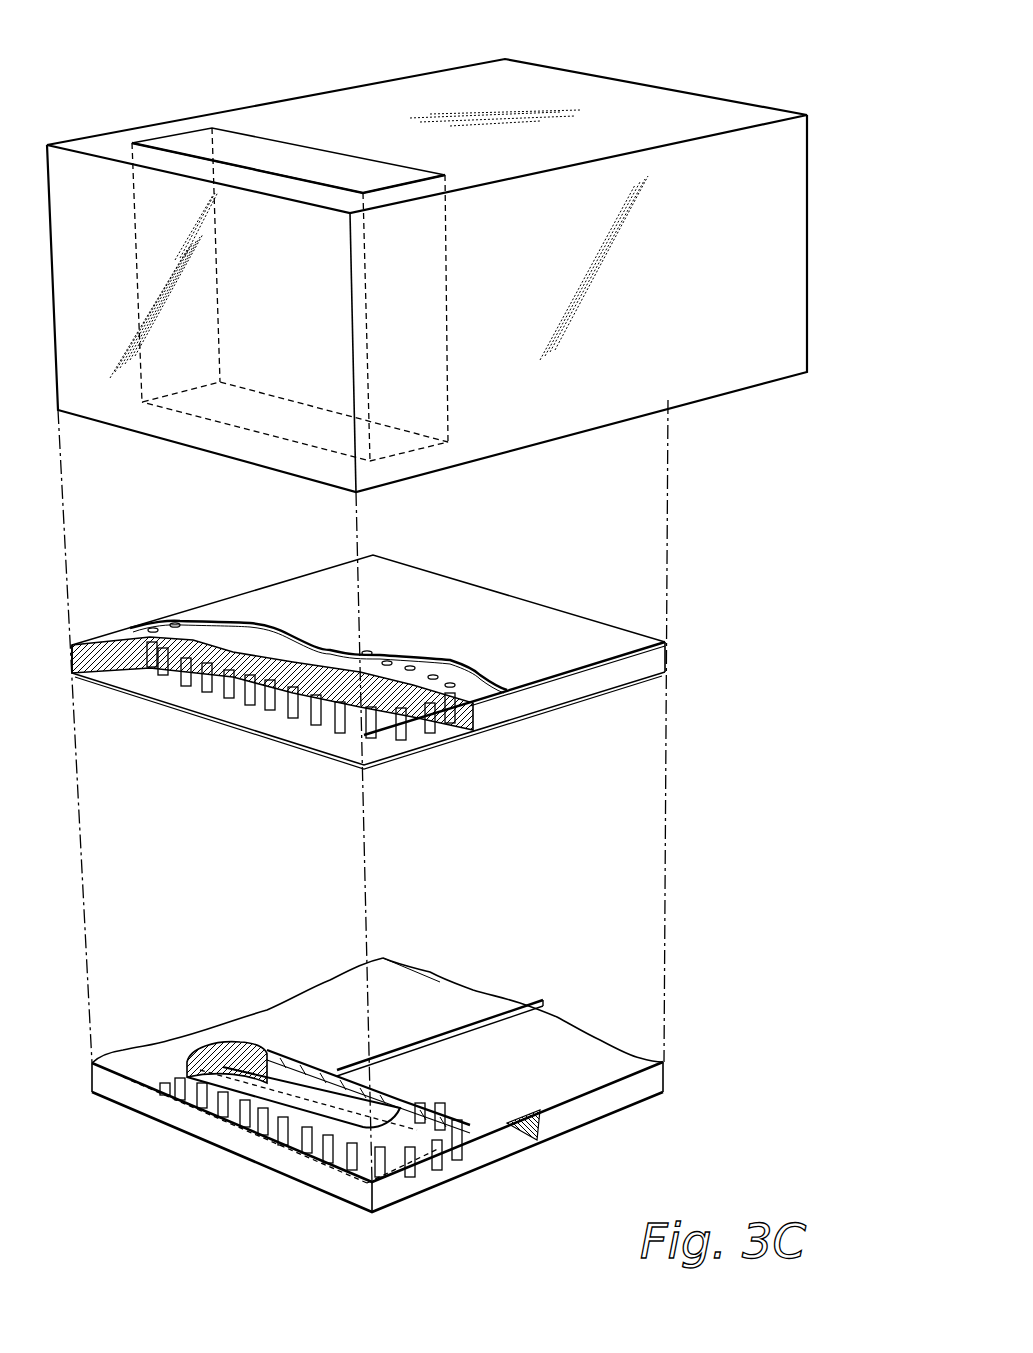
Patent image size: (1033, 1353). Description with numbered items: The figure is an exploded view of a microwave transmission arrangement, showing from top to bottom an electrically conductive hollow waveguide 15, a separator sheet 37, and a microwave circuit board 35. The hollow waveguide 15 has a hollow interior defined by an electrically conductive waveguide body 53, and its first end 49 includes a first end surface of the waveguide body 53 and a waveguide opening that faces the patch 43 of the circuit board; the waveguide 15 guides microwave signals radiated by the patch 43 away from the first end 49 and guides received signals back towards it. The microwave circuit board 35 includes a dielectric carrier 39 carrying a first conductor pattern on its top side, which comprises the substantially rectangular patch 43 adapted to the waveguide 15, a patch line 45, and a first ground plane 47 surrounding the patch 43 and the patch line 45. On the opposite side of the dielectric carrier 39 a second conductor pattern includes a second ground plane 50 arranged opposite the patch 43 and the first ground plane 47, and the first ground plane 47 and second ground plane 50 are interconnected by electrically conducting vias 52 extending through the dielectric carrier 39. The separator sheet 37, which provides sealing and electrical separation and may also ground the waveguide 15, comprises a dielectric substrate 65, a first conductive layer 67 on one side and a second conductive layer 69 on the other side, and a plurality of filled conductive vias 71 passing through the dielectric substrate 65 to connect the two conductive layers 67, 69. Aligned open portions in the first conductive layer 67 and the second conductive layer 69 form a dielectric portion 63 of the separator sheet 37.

The electrically conductive hollow waveguide 15 is at (438, 258).
The microwave circuit board 35 is at (441, 1055).
The separator sheet 37 is at (429, 689).
The dielectric carrier 39 is at (622, 1098).
The patch 43 is at (262, 1075).
The patch line 45 is at (472, 1025).
The first ground plane 47 is at (325, 1010).
The first end 49 is at (487, 422).
The second ground plane 50 is at (425, 1193).
The electrically conducting vias 52 is at (268, 1125).
The electrically conductive waveguide body 53 is at (660, 313).
The dielectric portion 63 is at (247, 640).
The dielectric substrate 65 is at (640, 665).
The first conductive layer 67 is at (375, 770).
The second conductive layer 69 is at (545, 638).
The conductive vias 71 is at (176, 670).